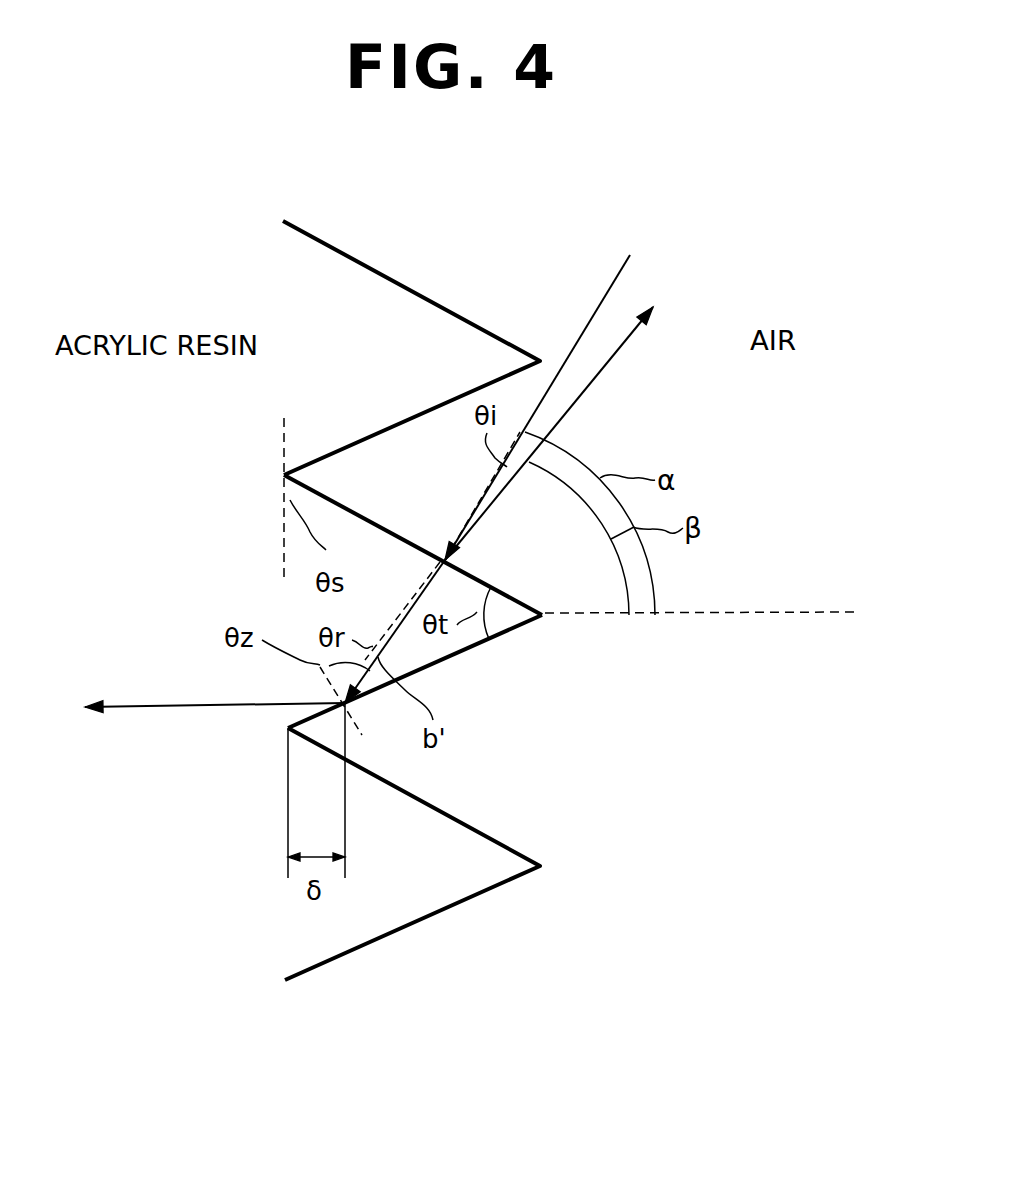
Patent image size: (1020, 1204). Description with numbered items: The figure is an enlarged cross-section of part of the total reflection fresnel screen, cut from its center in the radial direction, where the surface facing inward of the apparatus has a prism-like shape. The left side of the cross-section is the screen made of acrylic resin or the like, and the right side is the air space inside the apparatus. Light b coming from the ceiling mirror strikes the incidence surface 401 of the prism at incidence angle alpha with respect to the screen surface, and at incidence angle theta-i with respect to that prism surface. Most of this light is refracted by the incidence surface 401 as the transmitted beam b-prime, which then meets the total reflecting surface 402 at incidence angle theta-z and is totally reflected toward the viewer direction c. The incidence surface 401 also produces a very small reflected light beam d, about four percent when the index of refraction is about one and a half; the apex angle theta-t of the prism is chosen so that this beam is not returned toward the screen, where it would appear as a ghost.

The incidence surface 401 is at (473, 573).
The total reflecting surface 402 is at (477, 648).
The light b is at (580, 336).
The reflected light beam d is at (613, 358).
The viewer direction c is at (155, 707).